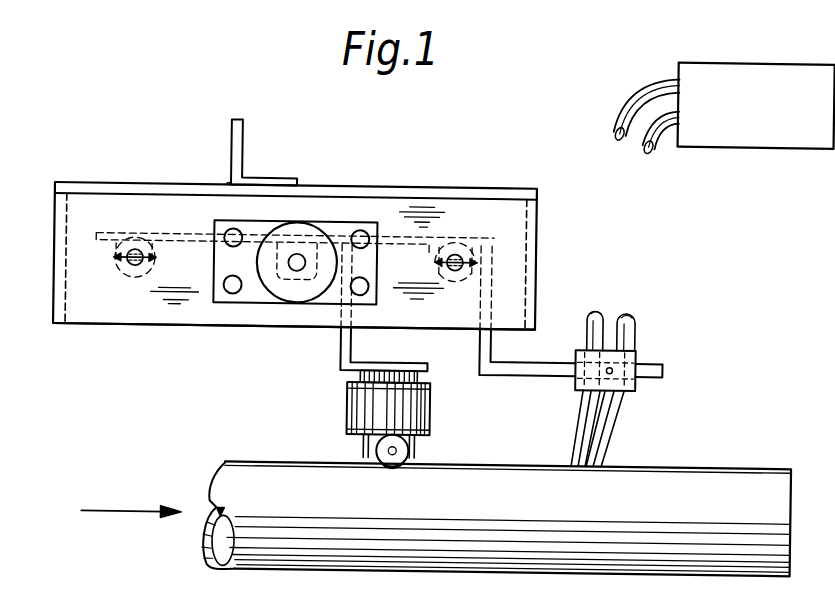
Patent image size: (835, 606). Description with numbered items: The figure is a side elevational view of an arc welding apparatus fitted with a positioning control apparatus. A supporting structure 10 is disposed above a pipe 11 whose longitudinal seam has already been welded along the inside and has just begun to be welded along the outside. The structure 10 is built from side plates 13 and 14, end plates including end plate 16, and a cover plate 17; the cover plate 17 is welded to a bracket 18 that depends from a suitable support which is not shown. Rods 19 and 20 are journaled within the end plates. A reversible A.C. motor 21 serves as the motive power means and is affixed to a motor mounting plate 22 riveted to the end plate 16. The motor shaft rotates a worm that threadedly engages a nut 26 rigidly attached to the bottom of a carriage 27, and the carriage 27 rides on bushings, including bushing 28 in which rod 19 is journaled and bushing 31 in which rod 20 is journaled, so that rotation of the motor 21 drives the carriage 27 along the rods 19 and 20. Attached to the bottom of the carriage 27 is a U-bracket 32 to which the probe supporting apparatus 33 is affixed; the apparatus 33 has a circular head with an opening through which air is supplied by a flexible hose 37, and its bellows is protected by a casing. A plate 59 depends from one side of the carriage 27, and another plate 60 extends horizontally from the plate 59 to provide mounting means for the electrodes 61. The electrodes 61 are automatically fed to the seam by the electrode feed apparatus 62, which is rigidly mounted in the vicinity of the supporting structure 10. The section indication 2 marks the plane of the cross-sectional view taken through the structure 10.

The section line 2- 2 is at (53, 196).
The supporting structure 10 is at (438, 170).
The pipe 11 is at (709, 461).
The side plate 13 is at (541, 290).
The side plate 14 is at (63, 288).
The end plate 16 is at (131, 318).
The cover plate 17 is at (362, 188).
The bracket 18 is at (243, 132).
The rod 19 is at (146, 267).
The rod 20 is at (449, 266).
The reversible A.C. motor 21 is at (298, 225).
The motor mounting plate 22 is at (259, 295).
The nut 26 is at (278, 259).
The carriage 27 is at (150, 221).
The bushing 28 is at (129, 282).
The bushing 31 is at (443, 265).
The U-bracket 32 is at (346, 344).
The probe supporting apparatus 33 is at (443, 411).
The flexible hose 37 is at (423, 373).
The plate 59 is at (497, 346).
The plate 60 is at (556, 365).
The electrodes 61 is at (602, 444).
The electrode feed apparatus 62 is at (720, 139).